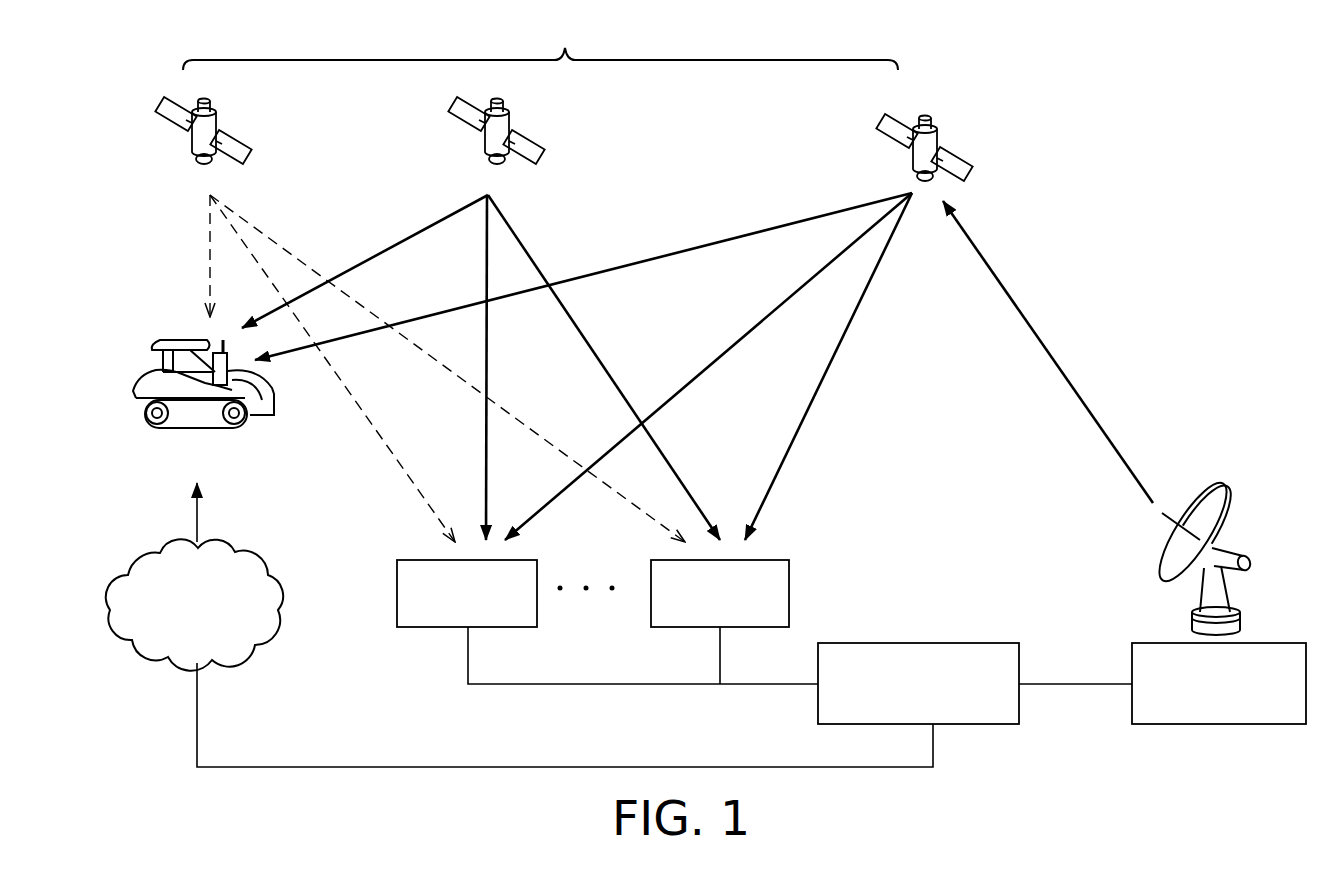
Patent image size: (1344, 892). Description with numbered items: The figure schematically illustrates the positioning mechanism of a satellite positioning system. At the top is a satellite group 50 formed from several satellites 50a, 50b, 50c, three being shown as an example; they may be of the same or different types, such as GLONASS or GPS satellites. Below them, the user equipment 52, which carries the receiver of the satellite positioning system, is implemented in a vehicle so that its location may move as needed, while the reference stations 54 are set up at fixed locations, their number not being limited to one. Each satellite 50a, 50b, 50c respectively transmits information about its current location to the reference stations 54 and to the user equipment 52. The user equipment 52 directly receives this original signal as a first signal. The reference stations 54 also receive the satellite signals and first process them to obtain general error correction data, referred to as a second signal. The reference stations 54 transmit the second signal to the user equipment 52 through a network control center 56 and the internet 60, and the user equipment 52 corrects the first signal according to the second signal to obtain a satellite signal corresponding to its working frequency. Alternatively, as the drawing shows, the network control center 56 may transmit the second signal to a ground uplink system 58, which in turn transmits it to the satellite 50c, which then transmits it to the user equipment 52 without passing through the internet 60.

The satellite group 50 is at (602, 93).
The satellite 50a is at (227, 116).
The satellite 50b is at (520, 116).
The satellite 50c is at (946, 133).
The user equipment 52 is at (165, 342).
The reference station 54 is at (518, 560).
The network control center 56 is at (965, 643).
The ground uplink system 58 is at (1285, 643).
The internet 60 is at (253, 643).